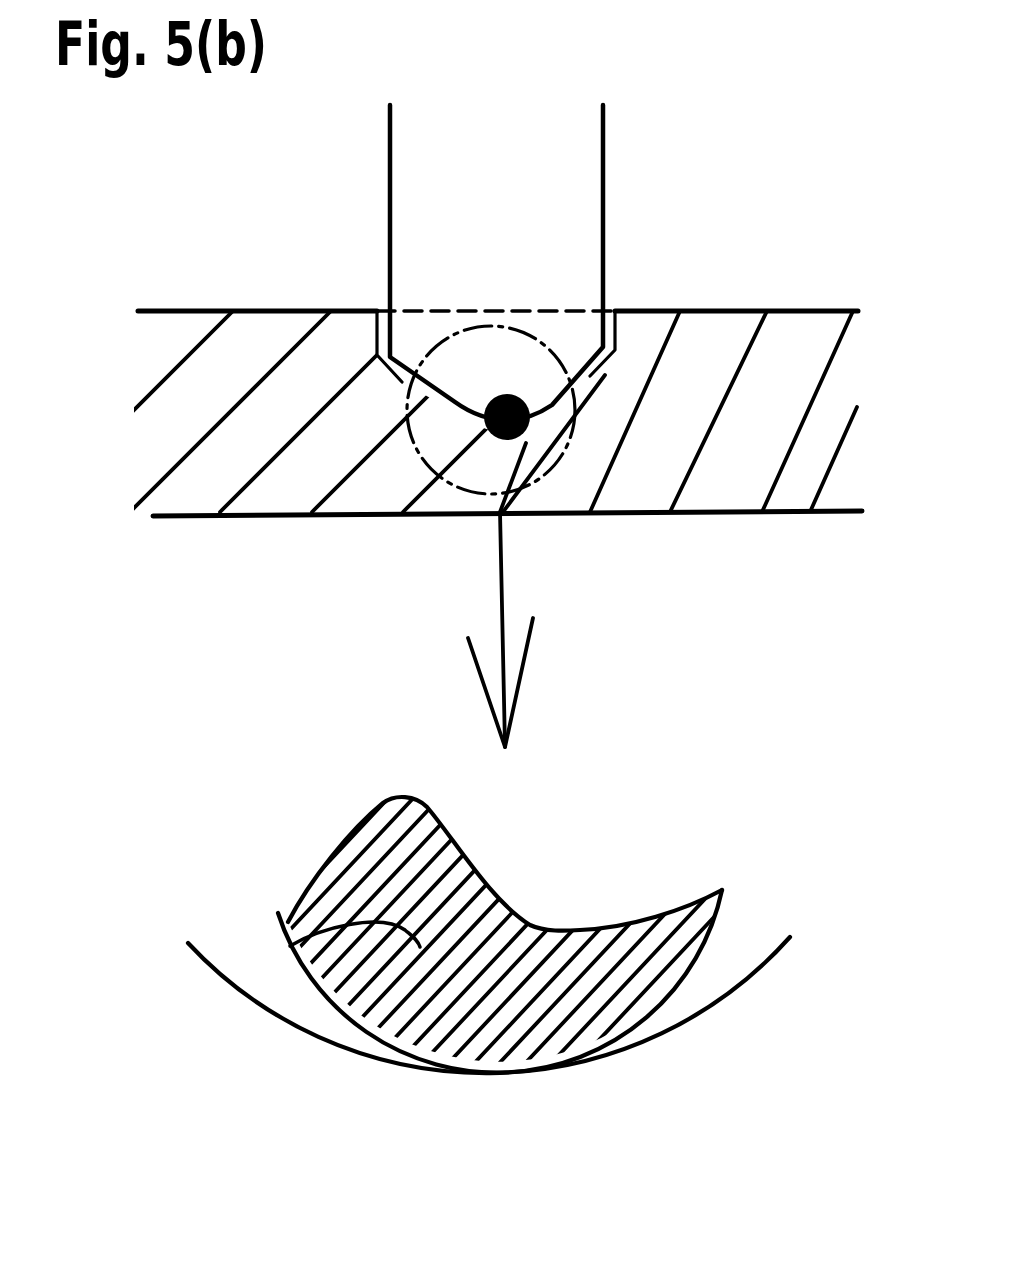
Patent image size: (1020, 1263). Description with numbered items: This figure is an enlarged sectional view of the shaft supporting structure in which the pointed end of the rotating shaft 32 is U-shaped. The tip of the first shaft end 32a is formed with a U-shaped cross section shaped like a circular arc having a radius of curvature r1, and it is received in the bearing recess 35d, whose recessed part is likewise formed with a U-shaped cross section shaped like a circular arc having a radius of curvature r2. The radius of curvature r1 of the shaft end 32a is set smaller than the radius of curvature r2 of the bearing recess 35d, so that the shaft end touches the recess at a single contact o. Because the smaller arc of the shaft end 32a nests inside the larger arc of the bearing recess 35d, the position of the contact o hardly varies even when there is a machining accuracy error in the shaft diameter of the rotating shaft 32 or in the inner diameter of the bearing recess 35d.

The rotating shaft 32 is at (603, 188).
The first shaft end 32a is at (290, 948).
The bearing recess 35d is at (338, 1038).
The radius of curvature r1 is at (495, 978).
The radius of curvature r2 is at (653, 900).
The contact O is at (800, 628).